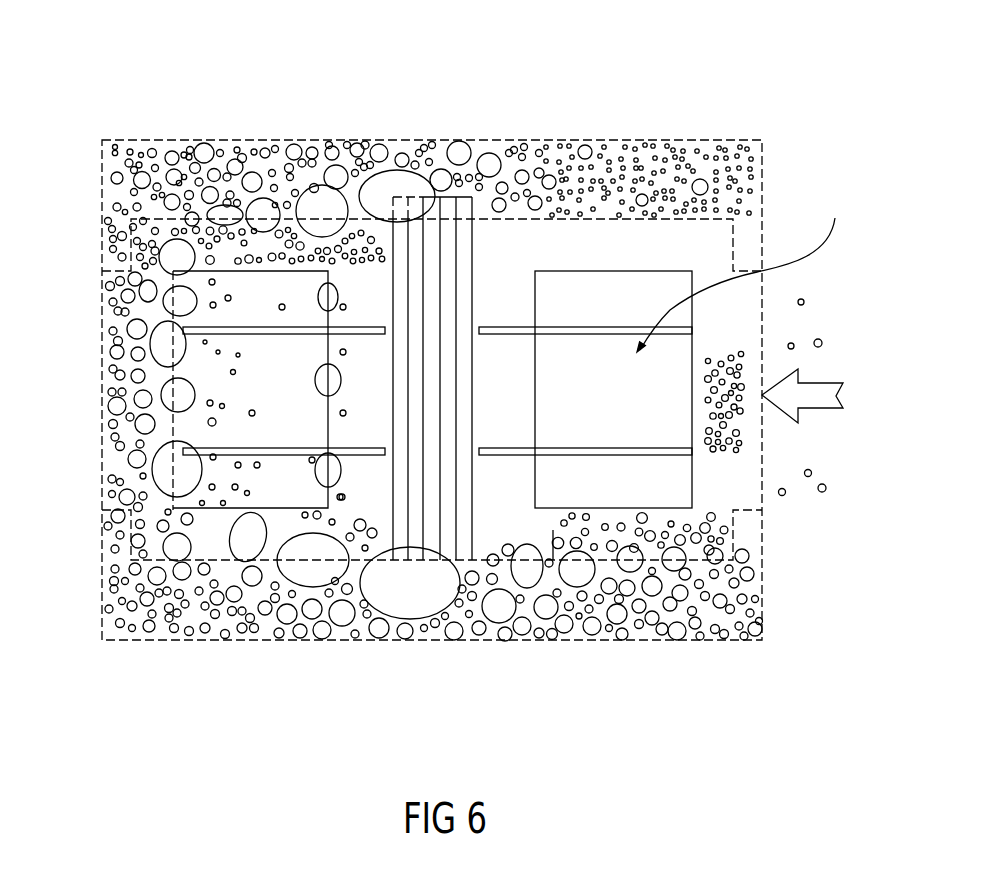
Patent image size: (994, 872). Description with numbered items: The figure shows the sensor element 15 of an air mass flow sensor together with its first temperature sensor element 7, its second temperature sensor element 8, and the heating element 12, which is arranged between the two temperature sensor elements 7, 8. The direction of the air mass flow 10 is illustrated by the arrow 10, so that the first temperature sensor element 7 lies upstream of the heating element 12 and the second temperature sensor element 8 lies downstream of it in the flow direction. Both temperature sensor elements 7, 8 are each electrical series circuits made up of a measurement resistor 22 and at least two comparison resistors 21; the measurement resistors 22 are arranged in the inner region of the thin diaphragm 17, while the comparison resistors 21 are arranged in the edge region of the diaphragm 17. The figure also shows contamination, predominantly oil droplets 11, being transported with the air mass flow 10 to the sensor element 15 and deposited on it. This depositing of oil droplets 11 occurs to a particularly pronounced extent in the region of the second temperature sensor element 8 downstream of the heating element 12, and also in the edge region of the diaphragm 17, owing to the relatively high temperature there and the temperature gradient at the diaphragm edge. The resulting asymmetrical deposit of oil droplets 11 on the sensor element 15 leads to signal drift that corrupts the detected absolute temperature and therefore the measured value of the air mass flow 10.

The first temperature sensor element 7 is at (741, 271).
The second temperature sensor element 8 is at (215, 412).
The air mass flow 10 is at (812, 410).
The oil droplets 11 is at (390, 638).
The heating element 12 is at (446, 213).
The sensor element 15 is at (762, 140).
The diaphragm 17 is at (527, 592).
The comparison resistors 21 is at (261, 293).
The measurement resistor 22 is at (437, 391).